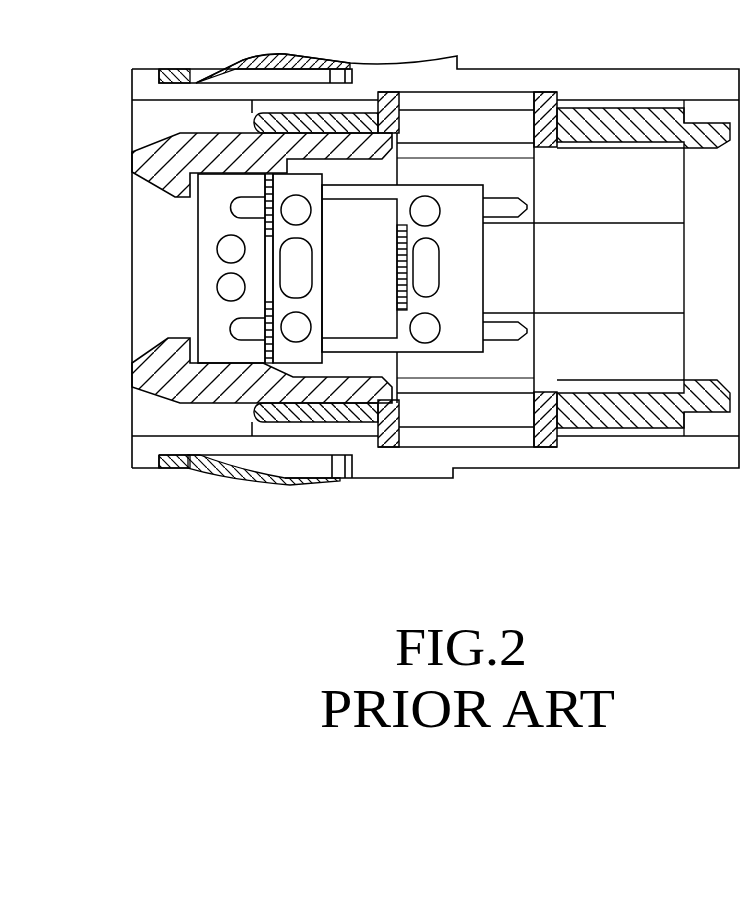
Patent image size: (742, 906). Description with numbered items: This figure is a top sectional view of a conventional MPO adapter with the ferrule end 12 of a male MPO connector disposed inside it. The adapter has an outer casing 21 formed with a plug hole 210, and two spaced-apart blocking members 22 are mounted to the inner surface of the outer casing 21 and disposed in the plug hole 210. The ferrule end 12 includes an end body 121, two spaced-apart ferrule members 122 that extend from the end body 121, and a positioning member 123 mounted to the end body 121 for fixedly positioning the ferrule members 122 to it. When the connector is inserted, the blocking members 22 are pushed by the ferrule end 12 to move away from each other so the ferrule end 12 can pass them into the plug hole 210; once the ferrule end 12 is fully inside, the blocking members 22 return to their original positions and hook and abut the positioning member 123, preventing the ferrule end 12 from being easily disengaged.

The ferrule end 12 is at (480, 145).
The end body 121 is at (362, 185).
The ferrule members 122 is at (505, 210).
The positioning member 123 is at (198, 268).
The outer casing 21 is at (330, 418).
The plug hole 210 is at (470, 385).
The blocking members 22 is at (163, 146).